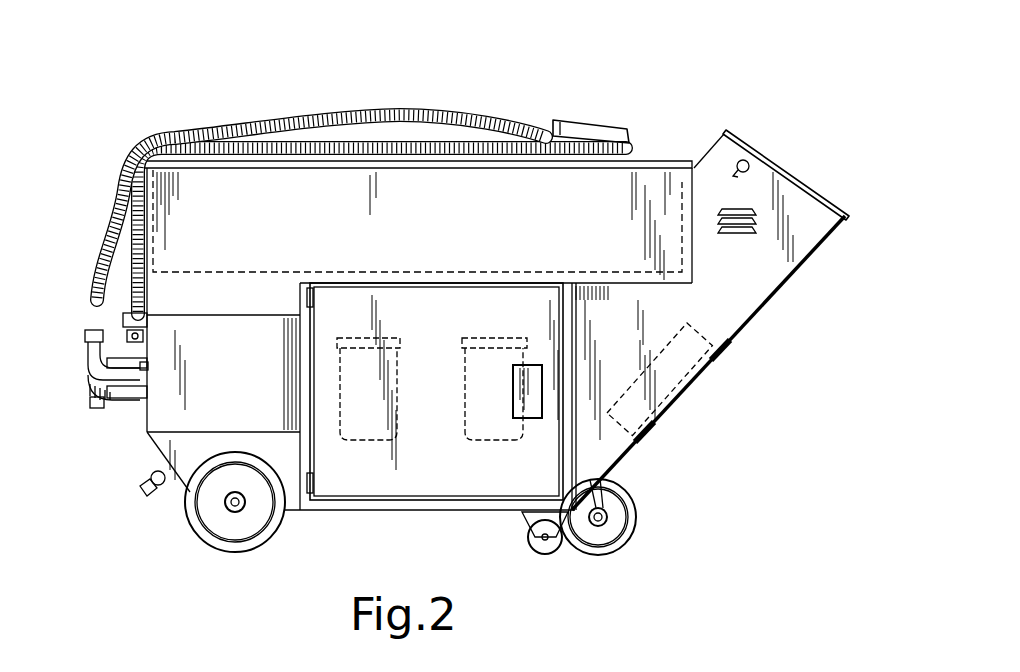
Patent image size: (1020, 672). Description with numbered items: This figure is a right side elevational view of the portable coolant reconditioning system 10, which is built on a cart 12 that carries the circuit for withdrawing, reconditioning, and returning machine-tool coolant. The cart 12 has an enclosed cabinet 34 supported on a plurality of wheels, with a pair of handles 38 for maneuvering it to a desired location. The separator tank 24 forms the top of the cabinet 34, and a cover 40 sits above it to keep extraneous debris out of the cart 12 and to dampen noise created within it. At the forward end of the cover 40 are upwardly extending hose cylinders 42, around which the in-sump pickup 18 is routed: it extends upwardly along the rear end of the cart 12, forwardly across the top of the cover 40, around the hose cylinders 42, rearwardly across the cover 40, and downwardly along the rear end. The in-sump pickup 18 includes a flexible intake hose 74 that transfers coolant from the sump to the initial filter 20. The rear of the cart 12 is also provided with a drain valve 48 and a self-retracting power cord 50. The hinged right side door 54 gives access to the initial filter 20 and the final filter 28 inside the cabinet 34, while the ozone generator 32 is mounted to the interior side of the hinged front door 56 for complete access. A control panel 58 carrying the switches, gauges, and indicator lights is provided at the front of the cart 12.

The portable coolant reconditioning system 10 is at (158, 84).
The cart 12 is at (340, 526).
The in-sump pickup 18 is at (304, 128).
The initial filter 20 is at (368, 440).
The separator tank 24 is at (683, 188).
The final filter 28 is at (495, 440).
The ozone generator 32 is at (667, 412).
The enclosed cabinet 34 is at (302, 525).
The handles 38 is at (747, 160).
The cover 40 is at (657, 156).
The hose cylinders 42 is at (590, 122).
The second drain valve 48 is at (87, 398).
The self-retracting power cord 50 is at (140, 478).
The right side door 54 is at (435, 488).
The front door 56 is at (690, 382).
The control panel 58 is at (803, 177).
The intake hose 74 is at (398, 147).